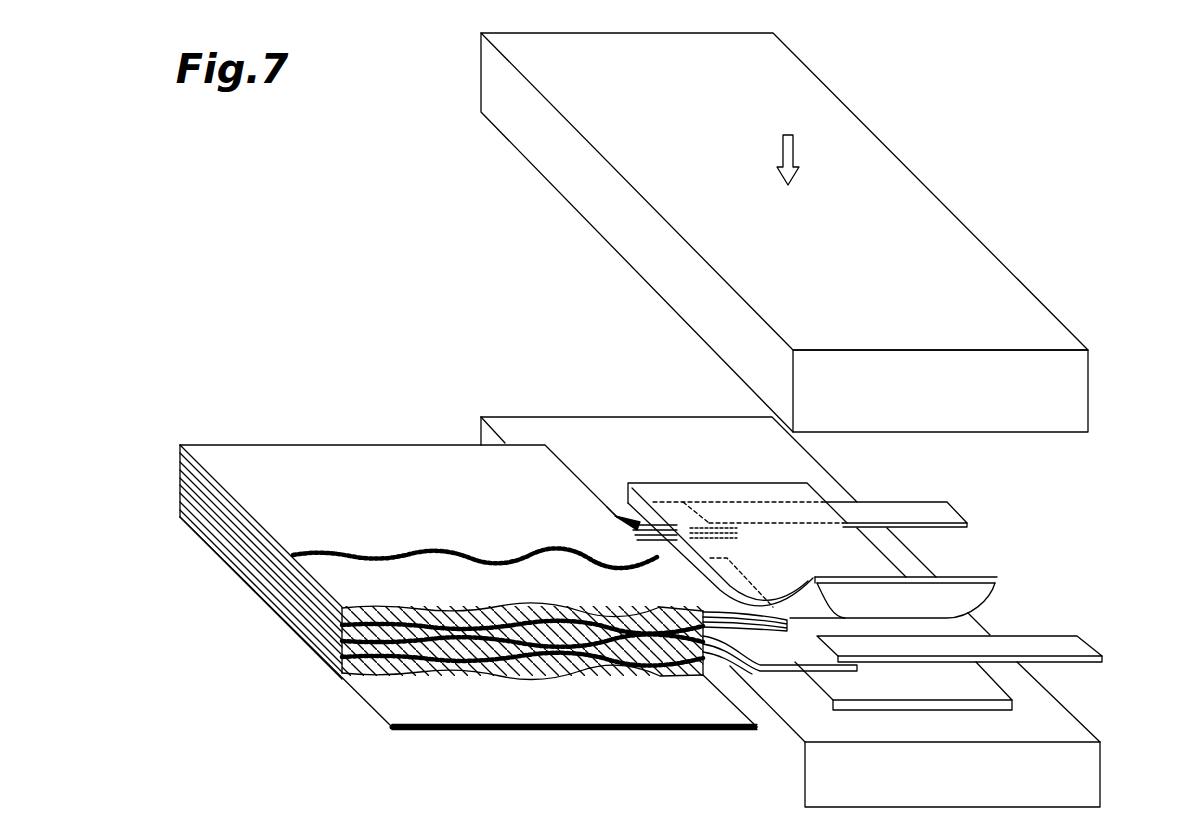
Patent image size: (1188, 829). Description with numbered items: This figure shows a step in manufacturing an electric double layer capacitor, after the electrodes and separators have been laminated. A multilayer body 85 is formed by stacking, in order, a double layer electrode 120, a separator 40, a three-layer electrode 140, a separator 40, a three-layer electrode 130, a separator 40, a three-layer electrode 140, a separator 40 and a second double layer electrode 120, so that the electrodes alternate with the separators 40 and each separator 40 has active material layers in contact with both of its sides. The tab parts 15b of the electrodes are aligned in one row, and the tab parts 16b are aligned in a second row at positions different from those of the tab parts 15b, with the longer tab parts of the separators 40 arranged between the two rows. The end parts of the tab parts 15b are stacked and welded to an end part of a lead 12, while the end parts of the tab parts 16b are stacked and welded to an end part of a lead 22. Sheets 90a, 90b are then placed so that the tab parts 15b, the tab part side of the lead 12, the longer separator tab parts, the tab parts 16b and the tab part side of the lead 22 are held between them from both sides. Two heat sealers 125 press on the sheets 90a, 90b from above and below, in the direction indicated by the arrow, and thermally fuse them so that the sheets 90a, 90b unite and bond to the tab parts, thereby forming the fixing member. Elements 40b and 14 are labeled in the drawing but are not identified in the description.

The heat sealer 125 is at (1086, 388).
The multilayer body 85 is at (470, 733).
The double layer electrode 120 is at (180, 445).
The separator 40 is at (180, 453).
The three-layer electrode 140 is at (180, 462).
The three-layer electrode 130 is at (180, 478).
The optical fiber end portion 40b is at (690, 575).
The tab part 15b is at (620, 507).
The sheath member 14 is at (750, 485).
The lead 12 is at (913, 508).
The sheet 90a is at (965, 577).
The lead 22 is at (1068, 640).
The sheet 90b is at (1020, 708).
The tab part 16b is at (745, 640).